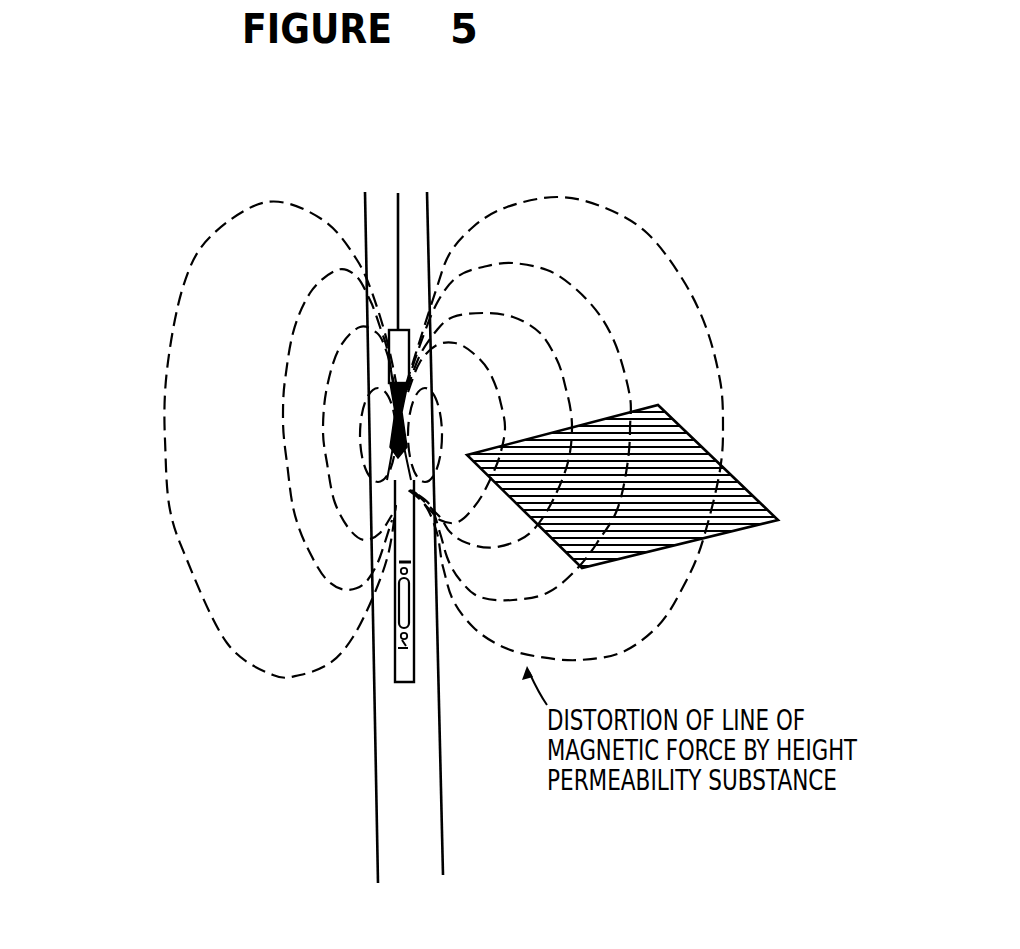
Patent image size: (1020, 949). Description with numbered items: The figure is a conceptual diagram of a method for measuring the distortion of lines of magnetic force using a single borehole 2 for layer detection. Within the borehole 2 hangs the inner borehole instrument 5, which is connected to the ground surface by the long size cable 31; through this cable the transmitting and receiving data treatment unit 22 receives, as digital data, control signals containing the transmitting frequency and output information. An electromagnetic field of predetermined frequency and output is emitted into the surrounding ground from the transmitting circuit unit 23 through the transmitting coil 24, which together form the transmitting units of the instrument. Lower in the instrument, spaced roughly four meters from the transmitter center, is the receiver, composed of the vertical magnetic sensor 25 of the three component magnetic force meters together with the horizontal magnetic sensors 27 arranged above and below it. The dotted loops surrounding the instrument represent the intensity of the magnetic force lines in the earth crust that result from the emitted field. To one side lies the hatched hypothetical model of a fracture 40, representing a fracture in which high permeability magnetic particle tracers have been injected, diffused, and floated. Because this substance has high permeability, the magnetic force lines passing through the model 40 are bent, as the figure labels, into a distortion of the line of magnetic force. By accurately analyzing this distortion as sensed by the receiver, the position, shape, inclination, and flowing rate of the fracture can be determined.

The borehole 2 is at (443, 790).
The inner borehole instrument 5 is at (234, 646).
The transmitting and receiving data treatment unit 22 is at (234, 646).
The transmitting circuit unit 23 is at (225, 240).
The transmitting coil 24 is at (396, 425).
The vertical magnetic sensor (Z direction) 25 is at (234, 646).
The Y-direction horizontal magnetic sensor 27 is at (395, 614).
The long size cable 31 is at (398, 193).
The hypothetical model of a fracture 40 is at (730, 476).